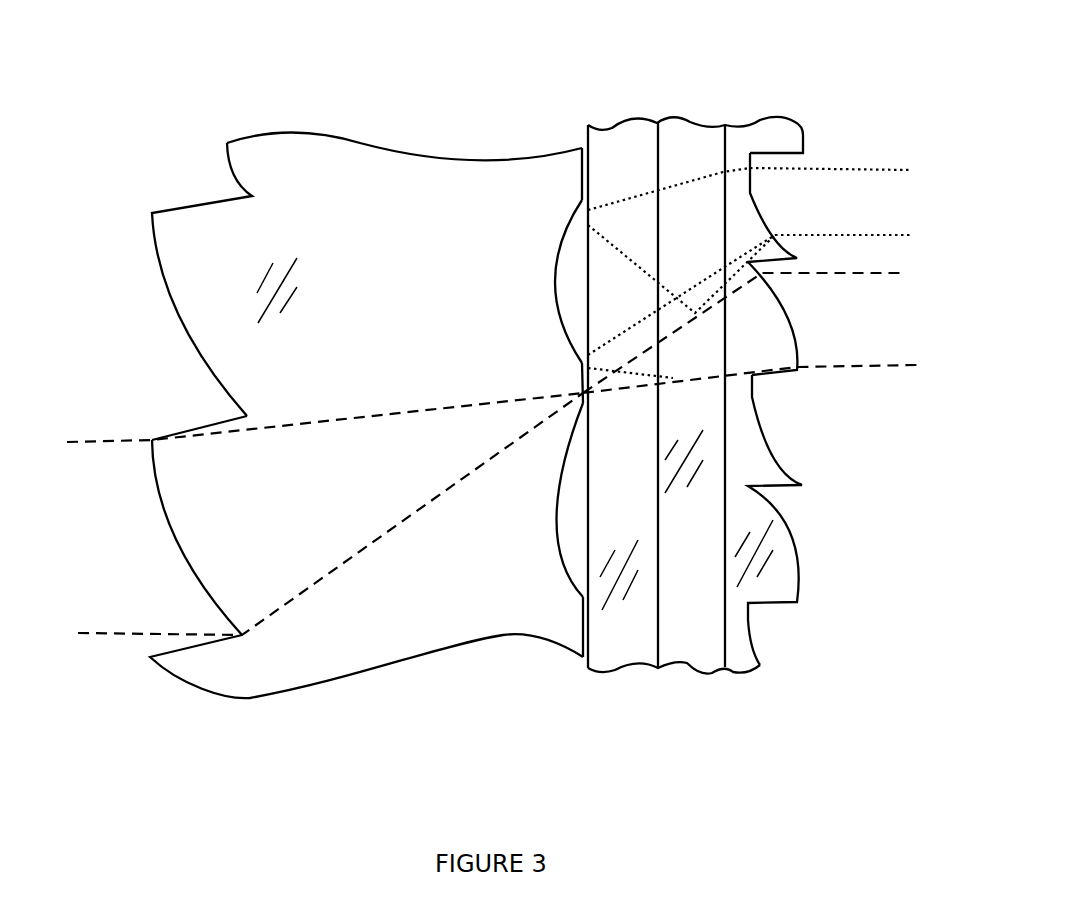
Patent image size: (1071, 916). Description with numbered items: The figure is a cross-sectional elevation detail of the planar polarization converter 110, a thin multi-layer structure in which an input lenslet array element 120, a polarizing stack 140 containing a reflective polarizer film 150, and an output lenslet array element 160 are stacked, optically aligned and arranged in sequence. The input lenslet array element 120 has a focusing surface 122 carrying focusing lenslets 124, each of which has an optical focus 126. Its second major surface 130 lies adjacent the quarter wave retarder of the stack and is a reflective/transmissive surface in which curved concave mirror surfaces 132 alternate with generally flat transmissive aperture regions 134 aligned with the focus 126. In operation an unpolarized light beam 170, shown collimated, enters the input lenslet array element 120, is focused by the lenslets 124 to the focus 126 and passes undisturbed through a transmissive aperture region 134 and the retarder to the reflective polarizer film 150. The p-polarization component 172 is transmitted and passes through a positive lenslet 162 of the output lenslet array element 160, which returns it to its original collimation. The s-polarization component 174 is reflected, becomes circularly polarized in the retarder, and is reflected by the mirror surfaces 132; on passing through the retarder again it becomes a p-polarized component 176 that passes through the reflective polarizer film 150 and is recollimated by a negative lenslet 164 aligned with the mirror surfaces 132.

The polarization converter 110 is at (614, 55).
The input lenslet array element 120 is at (336, 370).
The focusing surface 122 is at (230, 220).
The focusing lenslet 124 is at (167, 537).
The optical focus 126 is at (573, 390).
The second major surface 130 is at (582, 143).
The curved concave mirror surface 132 is at (560, 247).
The transmissive aperture region 134 is at (578, 420).
The polarizing stack 140 is at (623, 643).
The reflective polarizer film 150 is at (687, 647).
The output lenslet array element 160 is at (800, 433).
The positive lenslet 162 is at (802, 343).
The negative lenslet 164 is at (767, 218).
The unpolarized light beam 170 is at (150, 585).
The p-polarization component 172 is at (855, 317).
The s-polarization component 174 is at (610, 315).
The p-polarized component 176 is at (857, 223).